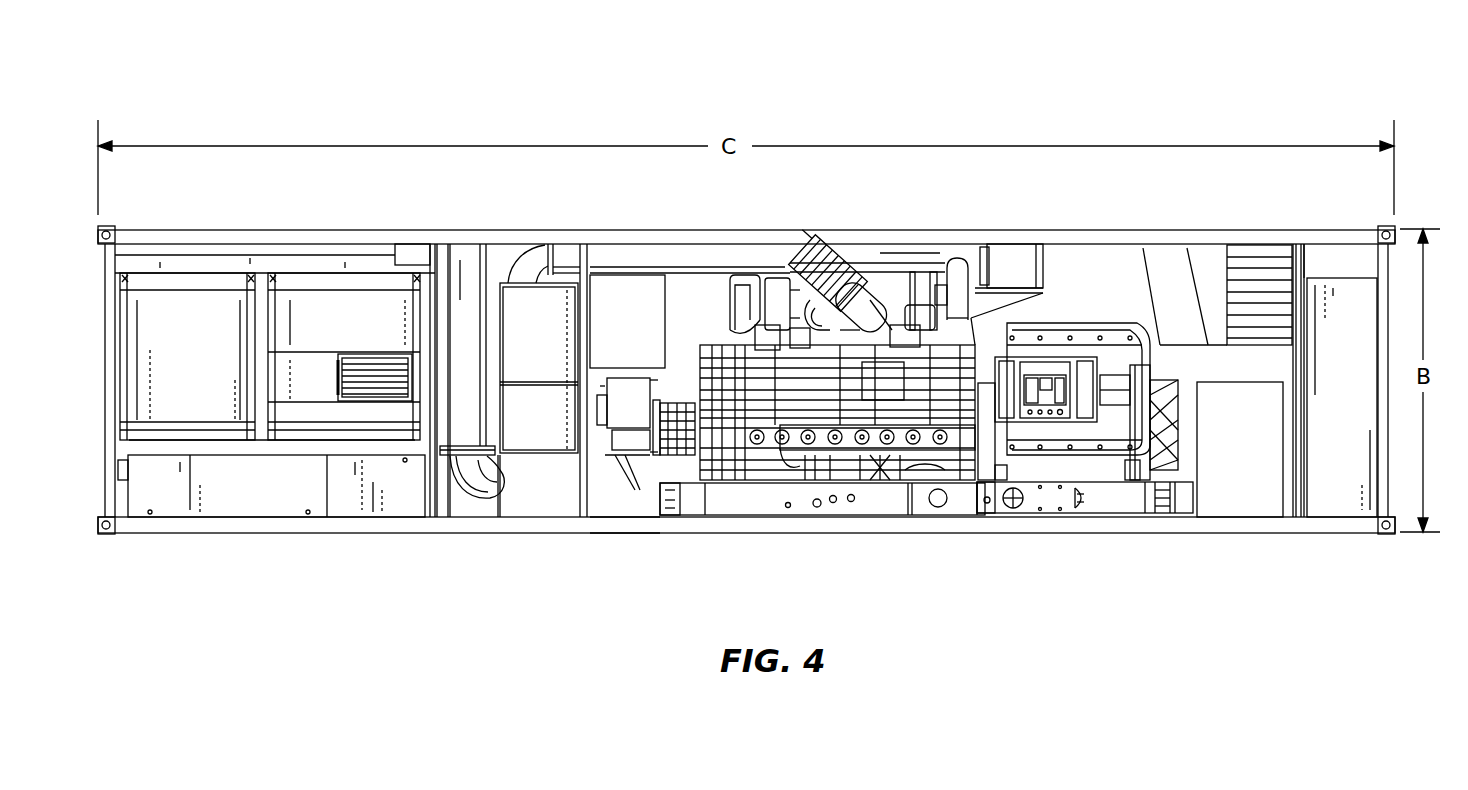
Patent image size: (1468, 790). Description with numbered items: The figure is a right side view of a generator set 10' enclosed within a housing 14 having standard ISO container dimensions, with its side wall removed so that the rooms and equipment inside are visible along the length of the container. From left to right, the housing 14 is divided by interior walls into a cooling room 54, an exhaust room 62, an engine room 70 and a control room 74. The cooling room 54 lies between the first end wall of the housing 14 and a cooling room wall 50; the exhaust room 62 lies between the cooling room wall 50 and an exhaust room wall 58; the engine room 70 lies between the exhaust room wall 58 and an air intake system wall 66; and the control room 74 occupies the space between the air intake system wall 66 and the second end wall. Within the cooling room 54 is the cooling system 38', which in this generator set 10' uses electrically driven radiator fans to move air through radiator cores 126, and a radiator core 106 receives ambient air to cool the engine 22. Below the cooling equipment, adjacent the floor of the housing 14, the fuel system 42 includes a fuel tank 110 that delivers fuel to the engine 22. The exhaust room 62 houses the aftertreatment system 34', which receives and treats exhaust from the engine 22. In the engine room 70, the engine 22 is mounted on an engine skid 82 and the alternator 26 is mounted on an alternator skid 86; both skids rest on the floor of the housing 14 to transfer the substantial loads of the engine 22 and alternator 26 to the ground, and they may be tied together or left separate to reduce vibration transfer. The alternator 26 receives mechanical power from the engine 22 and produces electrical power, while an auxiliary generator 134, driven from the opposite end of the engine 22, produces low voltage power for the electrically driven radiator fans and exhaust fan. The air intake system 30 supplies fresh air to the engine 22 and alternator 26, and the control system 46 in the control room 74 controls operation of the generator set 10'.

The generator set 10' is at (746, 303).
The cooling room 54 is at (435, 213).
The exhaust room 62 is at (597, 213).
The engine room 70 is at (1297, 213).
The control room 74 is at (1394, 213).
The radiator core 106 is at (170, 357).
The fuel tank 110 is at (178, 492).
The fuel system 42 is at (272, 480).
The radiator cores 126 is at (303, 327).
The cooling system 38' is at (375, 477).
The cooling room wall 50 is at (435, 482).
The aftertreatment system 34' is at (469, 531).
The exhaust room wall 58 is at (587, 502).
The housing 14 is at (618, 523).
The auxiliary generator 134 is at (623, 440).
The engine skid 82 is at (742, 502).
The engine 22 is at (810, 483).
The alternator 26 is at (1047, 432).
The alternator skid 86 is at (1100, 498).
The air intake system 30 is at (1225, 488).
The air intake system wall 66 is at (1297, 468).
The control system 46 is at (1345, 458).